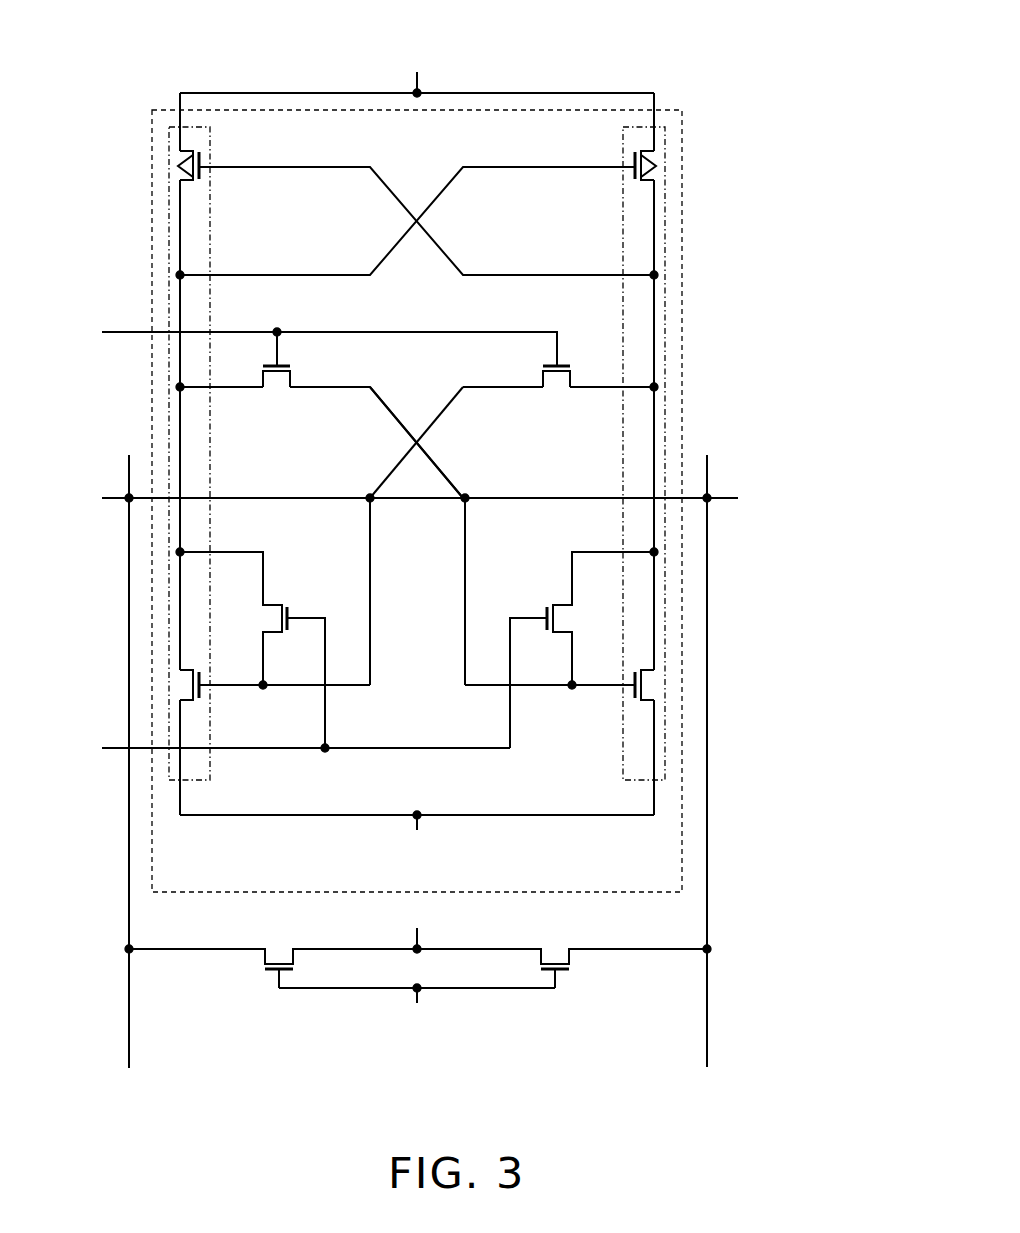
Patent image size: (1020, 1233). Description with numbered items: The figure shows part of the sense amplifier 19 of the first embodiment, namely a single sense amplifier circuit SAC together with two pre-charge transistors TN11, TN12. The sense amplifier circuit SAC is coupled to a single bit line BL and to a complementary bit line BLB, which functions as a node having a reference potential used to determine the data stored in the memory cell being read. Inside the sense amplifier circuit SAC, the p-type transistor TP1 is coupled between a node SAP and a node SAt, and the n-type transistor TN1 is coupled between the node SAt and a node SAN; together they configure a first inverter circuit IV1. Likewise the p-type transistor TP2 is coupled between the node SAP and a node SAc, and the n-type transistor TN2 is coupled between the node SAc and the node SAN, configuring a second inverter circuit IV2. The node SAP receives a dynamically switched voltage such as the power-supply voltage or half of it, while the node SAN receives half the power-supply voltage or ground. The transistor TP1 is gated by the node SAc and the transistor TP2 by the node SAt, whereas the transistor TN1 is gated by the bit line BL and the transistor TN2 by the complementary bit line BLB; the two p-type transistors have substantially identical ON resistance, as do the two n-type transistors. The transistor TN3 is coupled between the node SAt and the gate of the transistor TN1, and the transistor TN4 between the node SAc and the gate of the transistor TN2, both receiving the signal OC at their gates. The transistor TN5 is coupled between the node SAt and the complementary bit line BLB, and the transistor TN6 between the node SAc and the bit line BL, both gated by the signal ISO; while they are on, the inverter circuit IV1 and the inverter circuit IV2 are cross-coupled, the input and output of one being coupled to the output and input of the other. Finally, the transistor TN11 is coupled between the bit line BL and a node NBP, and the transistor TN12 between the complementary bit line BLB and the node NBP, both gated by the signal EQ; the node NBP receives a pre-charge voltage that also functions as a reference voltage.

The sense amplifier 19 is at (686, 60).
The node SAP is at (417, 69).
The node SAN is at (417, 840).
The sense amplifier circuit SAC is at (684, 186).
The inverter circuit IV1 is at (166, 297).
The inverter circuit IV2 is at (665, 294).
The node SAt is at (180, 360).
The node SAc is at (654, 360).
The p-type MOSFET TP1 is at (204, 152).
The p-type MOSFET TP2 is at (632, 153).
The n-type MOSFET TN1 is at (199, 703).
The n-type MOSFET TN2 is at (635, 703).
The n-type MOSFET TN3 is at (292, 611).
The n-type MOSFET TN4 is at (542, 611).
The n-type MOSFET TN5 is at (277, 397).
The n-type MOSFET TN6 is at (557, 397).
The transistor TN11 is at (266, 968).
The transistor TN12 is at (568, 968).
The signal ISO is at (311, 344).
The bit line BL is at (245, 761).
The complementary bit line BLB is at (753, 489).
The signal OC is at (291, 749).
The node NBP is at (418, 935).
The signal EQ is at (417, 1011).